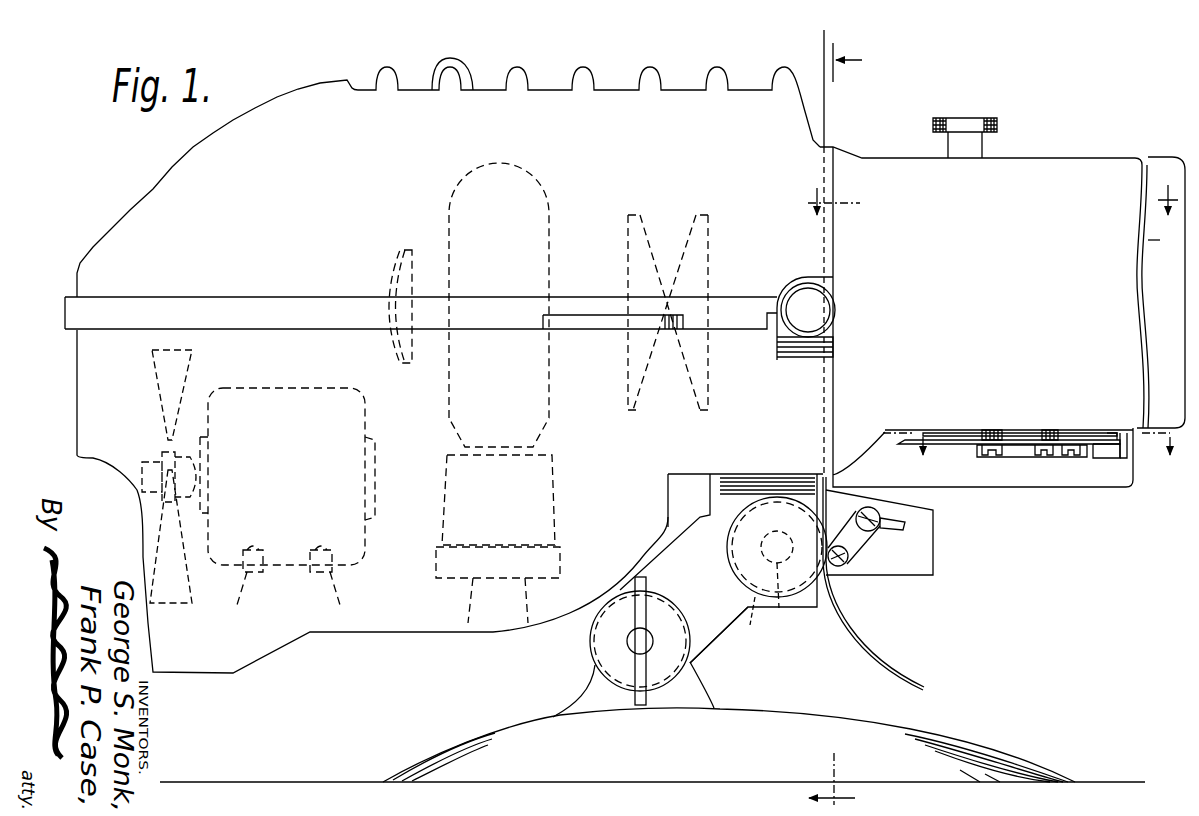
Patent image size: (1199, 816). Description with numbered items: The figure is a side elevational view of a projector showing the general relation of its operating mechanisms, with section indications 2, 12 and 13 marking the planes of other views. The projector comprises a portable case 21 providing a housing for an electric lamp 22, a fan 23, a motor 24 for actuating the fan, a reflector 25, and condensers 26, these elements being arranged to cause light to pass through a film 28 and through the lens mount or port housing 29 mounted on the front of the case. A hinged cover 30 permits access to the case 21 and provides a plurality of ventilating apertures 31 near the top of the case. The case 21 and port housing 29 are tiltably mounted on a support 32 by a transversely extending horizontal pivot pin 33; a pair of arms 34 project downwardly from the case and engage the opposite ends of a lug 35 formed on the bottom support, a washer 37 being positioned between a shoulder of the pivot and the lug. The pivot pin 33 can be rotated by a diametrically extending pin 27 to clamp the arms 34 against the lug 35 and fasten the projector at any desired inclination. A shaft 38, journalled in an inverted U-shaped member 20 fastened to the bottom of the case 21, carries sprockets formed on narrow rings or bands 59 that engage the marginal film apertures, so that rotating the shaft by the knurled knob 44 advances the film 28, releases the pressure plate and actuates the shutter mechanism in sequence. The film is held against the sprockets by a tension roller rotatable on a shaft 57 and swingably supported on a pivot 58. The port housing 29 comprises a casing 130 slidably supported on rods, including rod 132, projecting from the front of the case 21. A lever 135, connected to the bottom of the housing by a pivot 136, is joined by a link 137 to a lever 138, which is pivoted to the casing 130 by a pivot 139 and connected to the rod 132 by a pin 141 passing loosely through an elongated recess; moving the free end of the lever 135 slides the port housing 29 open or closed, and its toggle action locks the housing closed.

The section line 2- 2 is at (848, 428).
The section line 12- 12 is at (1033, 458).
The section line 13- 13 is at (982, 216).
The inverted U-shaped member 20 is at (706, 502).
The portable case 21 is at (152, 192).
The electric lamp 22 is at (540, 188).
The fan 23 is at (158, 395).
The motor 24 is at (306, 392).
The reflector 25 is at (393, 268).
The condensers 26 is at (697, 228).
The diametrically extending pin 27 is at (648, 697).
The film 28 is at (826, 106).
The lens mount or port housing 29 is at (1040, 156).
The hinged cover 30 is at (538, 110).
The ventilating apertures 31 is at (434, 72).
The support 32 is at (917, 742).
The pivot pin 33 is at (626, 641).
The arms 34 is at (703, 635).
The lug 35 is at (592, 690).
The washer 37 is at (603, 649).
The shaft 38 is at (779, 583).
The knurled knob 44 is at (727, 545).
The shaft 57 is at (850, 558).
The pivot 58 is at (887, 529).
The rings or bands 59 is at (747, 621).
The casing 130 is at (1105, 157).
The rod 132 is at (1115, 458).
The lever 135 is at (957, 446).
The pivot 136 is at (998, 457).
The link 137 is at (1085, 457).
The lever 138 is at (1096, 430).
The pivot 139 is at (1046, 430).
The pin 141 is at (1110, 442).